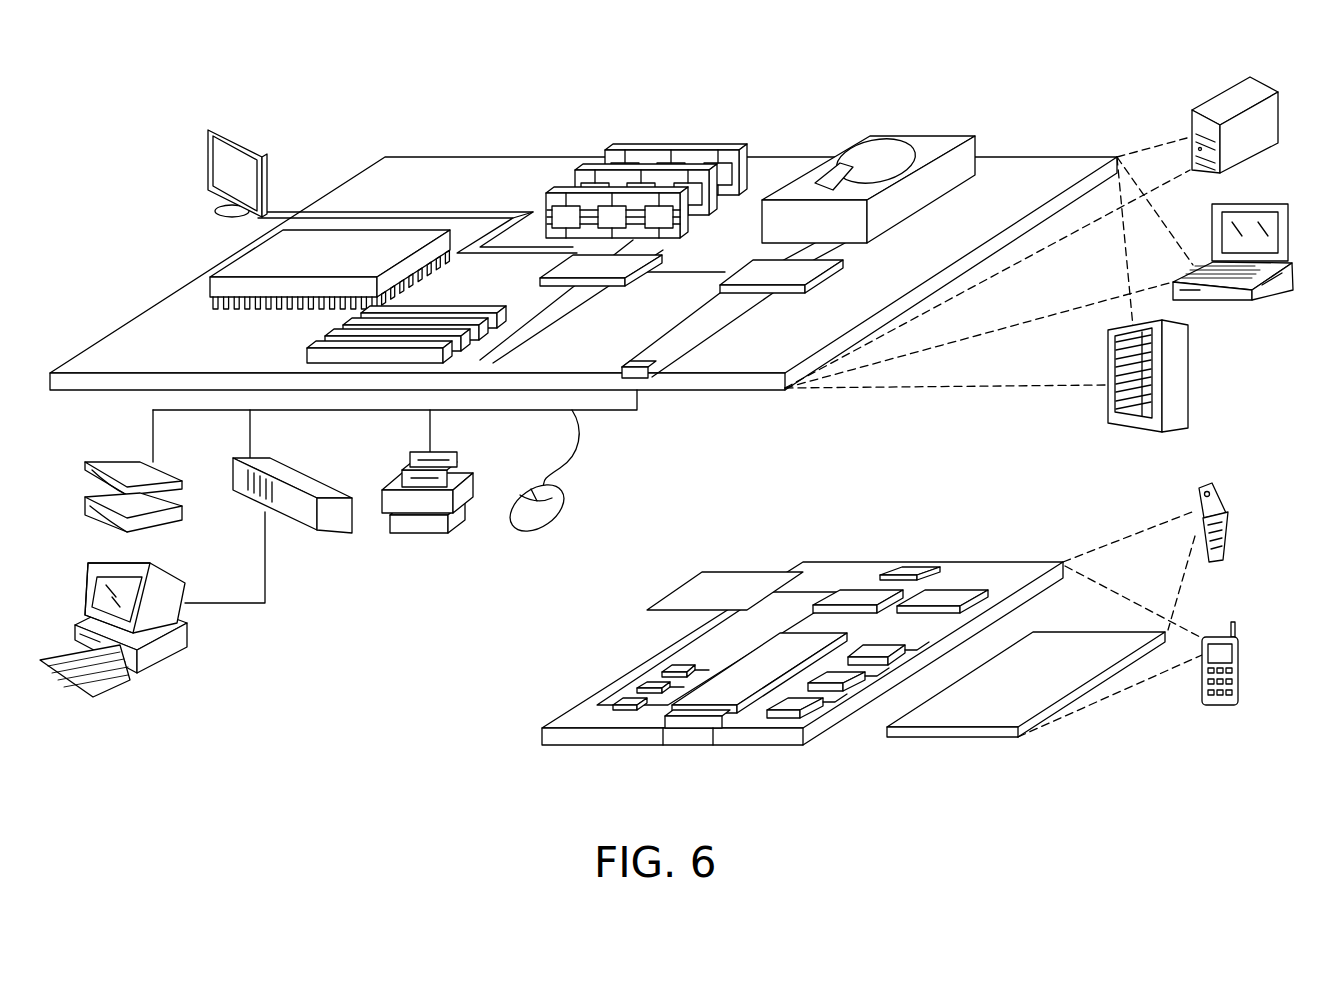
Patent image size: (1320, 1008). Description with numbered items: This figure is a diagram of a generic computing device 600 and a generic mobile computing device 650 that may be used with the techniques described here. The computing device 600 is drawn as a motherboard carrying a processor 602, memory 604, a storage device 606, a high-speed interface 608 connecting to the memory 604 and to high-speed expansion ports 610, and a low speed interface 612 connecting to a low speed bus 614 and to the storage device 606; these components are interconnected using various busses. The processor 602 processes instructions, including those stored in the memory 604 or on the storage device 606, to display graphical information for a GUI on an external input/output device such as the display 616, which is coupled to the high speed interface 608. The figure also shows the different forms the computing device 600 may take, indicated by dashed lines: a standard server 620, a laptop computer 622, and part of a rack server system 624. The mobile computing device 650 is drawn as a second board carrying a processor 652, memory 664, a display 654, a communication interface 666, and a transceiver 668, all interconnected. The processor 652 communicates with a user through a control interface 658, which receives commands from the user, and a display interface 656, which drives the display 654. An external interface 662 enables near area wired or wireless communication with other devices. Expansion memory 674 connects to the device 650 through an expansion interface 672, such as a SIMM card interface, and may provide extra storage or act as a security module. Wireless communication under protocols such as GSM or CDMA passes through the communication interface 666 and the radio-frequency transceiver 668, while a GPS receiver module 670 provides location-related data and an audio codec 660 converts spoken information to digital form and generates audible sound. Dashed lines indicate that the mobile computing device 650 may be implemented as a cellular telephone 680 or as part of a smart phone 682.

The computing device 600 is at (334, 98).
The processor 602 is at (237, 257).
The memory 604 is at (680, 149).
The storage device 606 is at (910, 137).
The high-speed interface 608 is at (612, 262).
The high-speed expansion ports 610 is at (333, 338).
The low speed interface 612 is at (756, 268).
The low speed bus 614 is at (643, 360).
The display 616 is at (212, 124).
The standard server 620 is at (1210, 104).
The laptop computer 622 is at (1267, 202).
The rack server system 624 is at (1190, 378).
The mobile computing device 650 is at (491, 759).
The processor 652 is at (727, 680).
The display 654 is at (1068, 648).
The display interface 656 is at (805, 702).
The control interface 658 is at (842, 677).
The audio codec 660 is at (880, 650).
The external interface 662 is at (687, 731).
The memory 664 is at (643, 682).
The communication interface 666 is at (857, 591).
The transceiver 668 is at (949, 592).
The GPS receiver module 670 is at (907, 573).
The expansion interface 672 is at (783, 572).
The expansion memory 674 is at (702, 572).
The cellular telephone 680 is at (1210, 486).
The smart phone 682 is at (1222, 637).